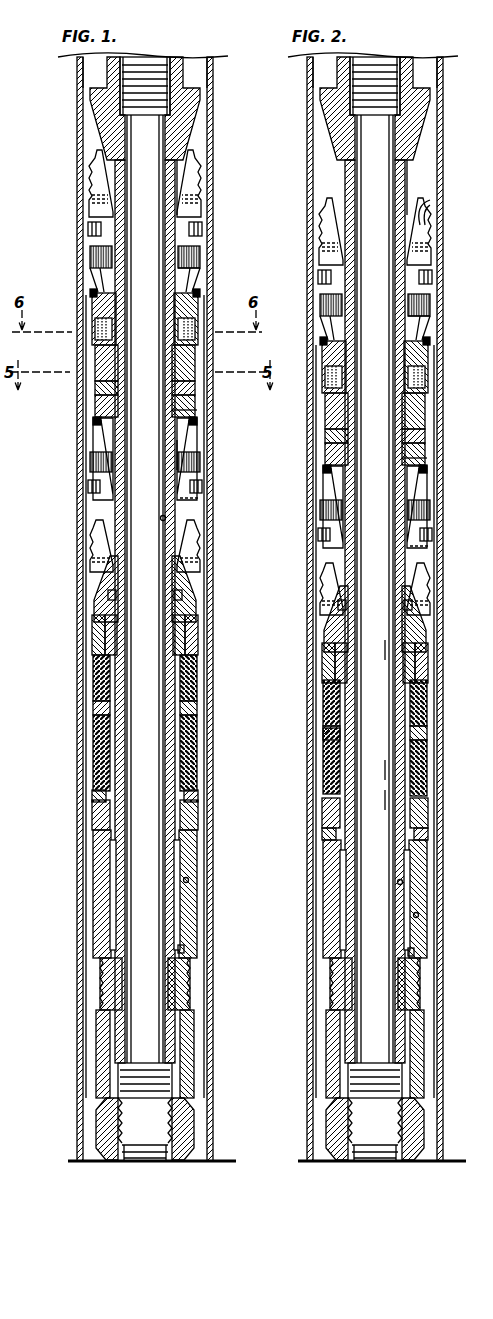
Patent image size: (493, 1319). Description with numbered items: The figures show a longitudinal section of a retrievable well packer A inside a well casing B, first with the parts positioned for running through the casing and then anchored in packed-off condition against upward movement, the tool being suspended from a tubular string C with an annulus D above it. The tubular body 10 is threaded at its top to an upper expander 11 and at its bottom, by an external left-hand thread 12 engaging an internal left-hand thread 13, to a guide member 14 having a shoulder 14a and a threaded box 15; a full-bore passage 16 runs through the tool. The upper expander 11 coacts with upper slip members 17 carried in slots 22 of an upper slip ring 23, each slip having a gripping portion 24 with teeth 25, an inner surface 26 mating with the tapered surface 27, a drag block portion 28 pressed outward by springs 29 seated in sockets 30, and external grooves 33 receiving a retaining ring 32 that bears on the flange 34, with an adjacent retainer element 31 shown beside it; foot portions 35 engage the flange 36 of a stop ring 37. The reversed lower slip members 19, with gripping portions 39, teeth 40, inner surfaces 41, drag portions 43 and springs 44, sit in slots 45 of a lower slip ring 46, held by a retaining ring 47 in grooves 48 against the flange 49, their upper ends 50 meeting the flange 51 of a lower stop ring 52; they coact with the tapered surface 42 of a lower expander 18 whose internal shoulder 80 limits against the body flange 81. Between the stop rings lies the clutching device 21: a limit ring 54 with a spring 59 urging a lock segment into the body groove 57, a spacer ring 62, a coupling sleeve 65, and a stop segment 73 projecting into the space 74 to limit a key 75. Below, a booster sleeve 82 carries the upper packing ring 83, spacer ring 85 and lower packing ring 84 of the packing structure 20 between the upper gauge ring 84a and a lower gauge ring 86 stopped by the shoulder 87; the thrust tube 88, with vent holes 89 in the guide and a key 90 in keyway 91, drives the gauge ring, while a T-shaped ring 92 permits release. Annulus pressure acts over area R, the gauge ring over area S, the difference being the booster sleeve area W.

In FIG. 1, the well packer A is at (189, 196).
In FIG. 2, the well packer A is at (444, 181).
In FIG. 1, the well casing B is at (80, 130).
In FIG. 2, the well casing B is at (350, 609).
In FIG. 1, the tubular string C is at (183, 66).
In FIG. 2, the tubular string C is at (447, 72).
In FIG. 1, the annulus D is at (92, 70).
In FIG. 2, the annulus D is at (294, 72).
In FIG. 2, the annular cross-sectional area of packing structure R is at (432, 652).
In FIG. 2, the cross-sectional area of booster sleeve W is at (435, 770).
In FIG. 2, the annular cross-sectional area between booster sleeve and casing S is at (432, 801).
In FIG. 1, the body 10 is at (126, 572).
In FIG. 2, the body 10 is at (333, 589).
In FIG. 1, the upper expander 11 is at (100, 103).
In FIG. 2, the upper expander 11 is at (336, 108).
In FIG. 1, the external left-hand thread 12 is at (170, 1043).
In FIG. 2, the external left-hand thread 12 is at (417, 589).
In FIG. 1, the internal left-hand thread 13 is at (112, 977).
In FIG. 2, the internal left-hand thread 13 is at (312, 984).
In FIG. 1, the guide member 14 is at (108, 1125).
In FIG. 2, the guide member 14 is at (348, 1129).
In FIG. 1, the shoulder 14a is at (125, 1070).
In FIG. 2, the shoulder 14a is at (333, 1080).
In FIG. 1, the threaded box 15 is at (170, 1125).
In FIG. 2, the threaded box 15 is at (421, 1140).
In FIG. 1, the passage 16 is at (166, 517).
In FIG. 2, the passage 16 is at (444, 886).
In FIG. 1, the upper slip members 17 is at (88, 199).
In FIG. 2, the upper slip members 17 is at (305, 253).
In FIG. 1, the lower expander 18 is at (100, 606).
In FIG. 2, the lower expander 18 is at (310, 619).
In FIG. 1, the lower slip members 19 is at (84, 532).
In FIG. 2, the lower slip members 19 is at (308, 586).
In FIG. 1, the packing structure 20 is at (200, 679).
In FIG. 2, the packing structure 20 is at (449, 703).
In FIG. 1, the clutching or latch device 21 is at (190, 360).
In FIG. 2, the clutching or latch device 21 is at (445, 411).
In FIG. 1, the slots 22 is at (195, 271).
In FIG. 2, the slots 22 is at (452, 328).
In FIG. 1, the upper slip ring 23 is at (94, 270).
In FIG. 2, the upper slip ring 23 is at (303, 328).
In FIG. 1, the upper gripping portion 24 is at (97, 176).
In FIG. 2, the upper gripping portion 24 is at (381, 231).
In FIG. 1, the wickers or teeth 25 is at (197, 165).
In FIG. 2, the wickers or teeth 25 is at (456, 212).
In FIG. 2, the inner surfaces 26 is at (454, 201).
In FIG. 1, the externally tapered surface 27 is at (197, 129).
In FIG. 2, the externally tapered surface 27 is at (442, 108).
In FIG. 1, the drag block portion 28 is at (195, 242).
In FIG. 2, the drag block portion 28 is at (307, 305).
In FIG. 1, the helical compression springs 29 is at (100, 252).
In FIG. 2, the helical compression springs 29 is at (448, 302).
In FIG. 1, the socket 30 is at (195, 257).
In FIG. 2, the socket 30 is at (448, 312).
In FIG. 1, the retainer 31 is at (198, 228).
In FIG. 2, the retainer 31 is at (299, 285).
In FIG. 1, the retaining ring 32 is at (200, 214).
In FIG. 2, the retaining ring 32 is at (302, 277).
In FIG. 1, the external grooves 33 is at (95, 228).
In FIG. 2, the external grooves 33 is at (454, 274).
In FIG. 1, the interrupted flange 34 is at (203, 198).
In FIG. 2, the interrupted flange 34 is at (450, 251).
In FIG. 1, the lower foot portions 35 is at (196, 299).
In FIG. 2, the lower foot portions 35 is at (300, 346).
In FIG. 1, the flange 36 is at (92, 292).
In FIG. 2, the flange 36 is at (456, 346).
In FIG. 1, the stop ring 37 is at (100, 309).
In FIG. 2, the stop ring 37 is at (406, 367).
In FIG. 1, the lower gripping portion 39 is at (93, 547).
In FIG. 2, the lower gripping portion 39 is at (306, 604).
In FIG. 1, the teeth or wickers 40 is at (206, 537).
In FIG. 2, the teeth or wickers 40 is at (448, 589).
In FIG. 1, the inner surfaces 41 is at (196, 551).
In FIG. 2, the inner surfaces 41 is at (449, 602).
In FIG. 1, the tapered surface 42 is at (190, 586).
In FIG. 2, the tapered surface 42 is at (445, 619).
In FIG. 1, the drag portion 43 is at (100, 459).
In FIG. 2, the drag portion 43 is at (307, 510).
In FIG. 1, the springs 44 is at (192, 465).
In FIG. 2, the springs 44 is at (448, 510).
In FIG. 1, the longitudinal slots 45 is at (104, 431).
In FIG. 2, the longitudinal slots 45 is at (308, 507).
In FIG. 1, the lower slip ring 46 is at (190, 436).
In FIG. 2, the lower slip ring 46 is at (448, 507).
In FIG. 1, the retaining ring 47 is at (93, 484).
In FIG. 2, the retaining ring 47 is at (301, 537).
In FIG. 1, the slip grooves 48 is at (197, 483).
In FIG. 2, the slip grooves 48 is at (454, 534).
In FIG. 1, the lower slip ring flange 49 is at (197, 499).
In FIG. 2, the lower slip ring flange 49 is at (449, 555).
In FIG. 1, the upper ends of lower slips 50 is at (96, 413).
In FIG. 2, the upper ends of lower slips 50 is at (454, 475).
In FIG. 1, the downwardly extending flange 51 is at (196, 419).
In FIG. 2, the downwardly extending flange 51 is at (302, 474).
In FIG. 1, the lower stop ring 52 is at (188, 406).
In FIG. 2, the lower stop ring 52 is at (445, 456).
In FIG. 1, the limit ring 54 is at (105, 349).
In FIG. 2, the limit ring 54 is at (310, 411).
In FIG. 1, the circumferential groove 57 is at (178, 452).
In FIG. 1, the helical compression spring 59 is at (188, 377).
In FIG. 2, the helical compression spring 59 is at (445, 426).
In FIG. 1, the spacer ring 62 is at (110, 382).
In FIG. 2, the spacer ring 62 is at (310, 446).
In FIG. 1, the swivel or coupling sleeve 65 is at (185, 391).
In FIG. 2, the swivel or coupling sleeve 65 is at (445, 445).
In FIG. 2, the arcuate stop segment 73 is at (448, 379).
In FIG. 1, the counterbore or space 74 is at (104, 323).
In FIG. 2, the counterbore or space 74 is at (307, 382).
In FIG. 1, the key 75 is at (185, 319).
In FIG. 1, the internal shoulder 80 is at (181, 596).
In FIG. 2, the internal shoulder 80 is at (446, 641).
In FIG. 1, the external body flange 81 is at (110, 593).
In FIG. 2, the external body flange 81 is at (309, 594).
In FIG. 1, the booster sleeve 82 is at (100, 747).
In FIG. 2, the booster sleeve 82 is at (306, 761).
In FIG. 1, the upper packing ring 83 is at (100, 677).
In FIG. 2, the upper packing ring 83 is at (306, 703).
In FIG. 1, the lower packing ring 84 is at (193, 744).
In FIG. 2, the lower packing ring 84 is at (449, 768).
In FIG. 1, the upper gauge ring 84a is at (98, 635).
In FIG. 2, the upper gauge ring 84a is at (305, 663).
In FIG. 1, the spacer ring 85 is at (197, 707).
In FIG. 2, the spacer ring 85 is at (406, 730).
In FIG. 1, the lower gauge ring 86 is at (100, 817).
In FIG. 2, the lower gauge ring 86 is at (306, 813).
In FIG. 1, the lower shoulder 87 is at (100, 797).
In FIG. 2, the lower shoulder 87 is at (304, 839).
In FIG. 1, the thrust tube 88 is at (100, 909).
In FIG. 2, the thrust tube 88 is at (309, 721).
In FIG. 1, the vent holes 89 is at (190, 974).
In FIG. 2, the vent holes 89 is at (443, 984).
In FIG. 1, the key 90 is at (197, 821).
In FIG. 2, the key 90 is at (446, 721).
In FIG. 1, the longitudinal keyway 91 is at (189, 880).
In FIG. 2, the longitudinal keyway 91 is at (452, 917).
In FIG. 1, the T-shaped ring 92 is at (185, 947).
In FIG. 2, the T-shaped ring 92 is at (448, 952).